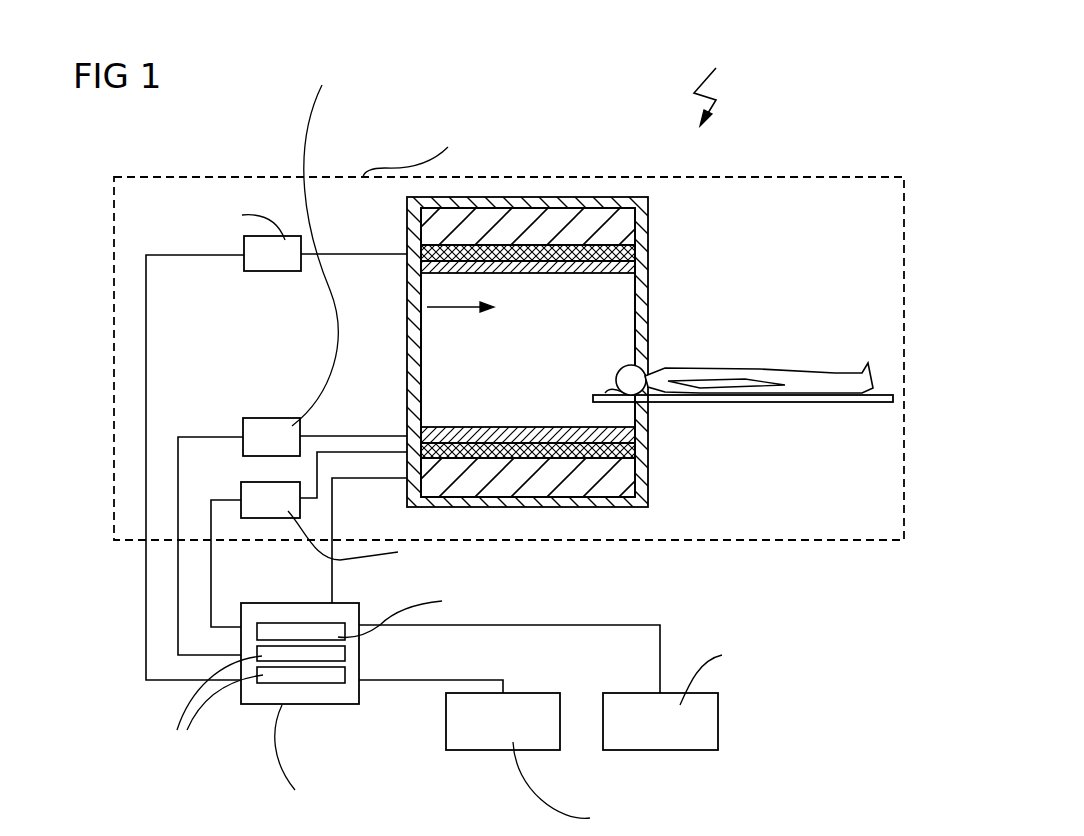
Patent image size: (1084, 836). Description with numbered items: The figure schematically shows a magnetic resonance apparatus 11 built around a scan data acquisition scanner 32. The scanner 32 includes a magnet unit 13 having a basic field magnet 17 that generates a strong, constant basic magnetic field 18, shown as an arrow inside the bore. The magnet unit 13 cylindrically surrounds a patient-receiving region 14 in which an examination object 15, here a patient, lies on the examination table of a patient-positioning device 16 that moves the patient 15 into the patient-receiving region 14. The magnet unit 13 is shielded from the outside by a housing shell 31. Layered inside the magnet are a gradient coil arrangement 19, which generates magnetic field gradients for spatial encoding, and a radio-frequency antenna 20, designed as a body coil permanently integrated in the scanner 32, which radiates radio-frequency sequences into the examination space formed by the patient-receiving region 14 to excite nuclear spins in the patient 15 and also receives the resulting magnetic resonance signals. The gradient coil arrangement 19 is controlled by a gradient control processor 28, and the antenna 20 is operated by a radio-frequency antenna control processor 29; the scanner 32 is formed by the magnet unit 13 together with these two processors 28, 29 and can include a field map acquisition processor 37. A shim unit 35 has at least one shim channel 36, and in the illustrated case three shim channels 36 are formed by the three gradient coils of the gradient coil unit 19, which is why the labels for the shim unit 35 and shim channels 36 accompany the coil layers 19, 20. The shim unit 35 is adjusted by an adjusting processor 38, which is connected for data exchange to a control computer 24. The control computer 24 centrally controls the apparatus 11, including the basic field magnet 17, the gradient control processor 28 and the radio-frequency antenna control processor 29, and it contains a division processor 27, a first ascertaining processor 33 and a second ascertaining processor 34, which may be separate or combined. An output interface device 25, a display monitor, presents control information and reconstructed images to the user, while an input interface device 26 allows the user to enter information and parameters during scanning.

The magnetic resonance apparatus 11 is at (509, 275).
The magnet unit 13 is at (561, 314).
The patient-receiving region 14 is at (622, 318).
The examination object 15 is at (830, 370).
The patient-positioning device 16 is at (863, 404).
The basic field magnet 17 is at (615, 228).
The basic magnetic field 18 is at (452, 310).
The gradient coil arrangement 19 is at (625, 252).
The radio-frequency antenna 20 is at (632, 270).
The control computer 24 is at (365, 706).
The output interface device 25 is at (446, 721).
The input interface device 26 is at (718, 720).
The division processor 27 is at (345, 632).
The gradient control processor 28 is at (275, 520).
The radio-frequency antenna control processor 29 is at (279, 418).
The housing shell 31 is at (585, 197).
The scanner 32 is at (509, 326).
The first ascertaining processor 33 is at (345, 650).
The second ascertaining processor 34 is at (300, 704).
The shim unit 35 is at (614, 351).
The shim channel 36 is at (614, 351).
The field map acquisition processor 37 is at (240, 177).
The adjusting processor 38 is at (275, 272).